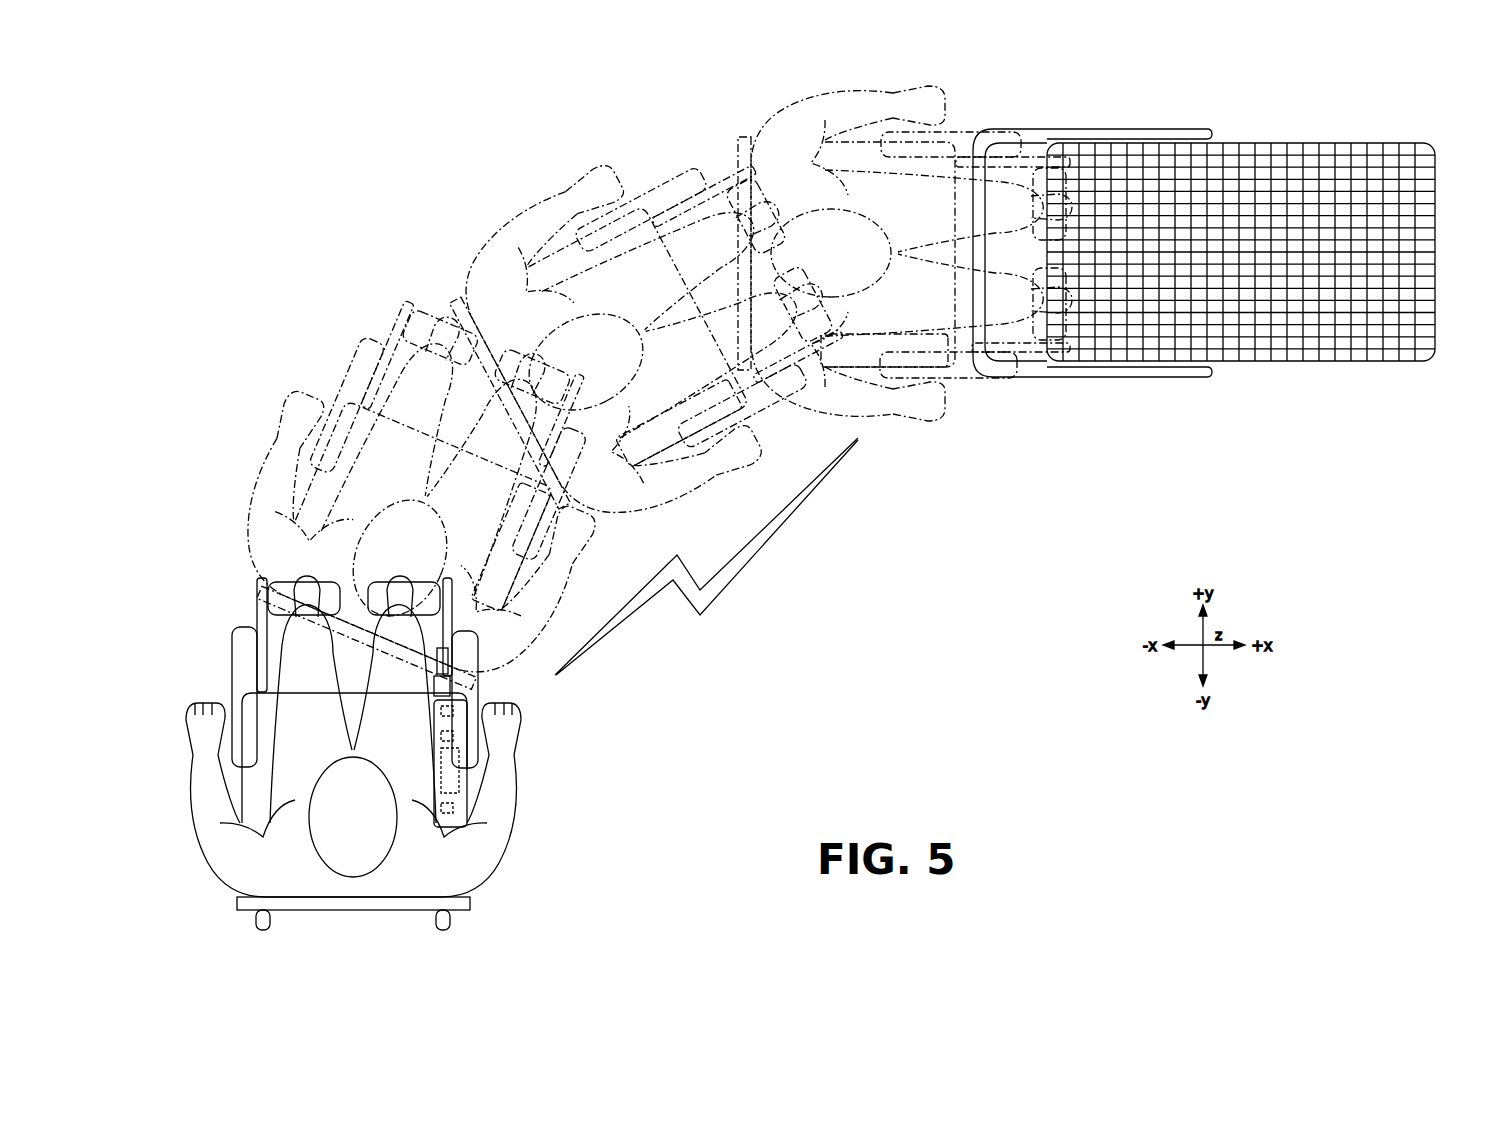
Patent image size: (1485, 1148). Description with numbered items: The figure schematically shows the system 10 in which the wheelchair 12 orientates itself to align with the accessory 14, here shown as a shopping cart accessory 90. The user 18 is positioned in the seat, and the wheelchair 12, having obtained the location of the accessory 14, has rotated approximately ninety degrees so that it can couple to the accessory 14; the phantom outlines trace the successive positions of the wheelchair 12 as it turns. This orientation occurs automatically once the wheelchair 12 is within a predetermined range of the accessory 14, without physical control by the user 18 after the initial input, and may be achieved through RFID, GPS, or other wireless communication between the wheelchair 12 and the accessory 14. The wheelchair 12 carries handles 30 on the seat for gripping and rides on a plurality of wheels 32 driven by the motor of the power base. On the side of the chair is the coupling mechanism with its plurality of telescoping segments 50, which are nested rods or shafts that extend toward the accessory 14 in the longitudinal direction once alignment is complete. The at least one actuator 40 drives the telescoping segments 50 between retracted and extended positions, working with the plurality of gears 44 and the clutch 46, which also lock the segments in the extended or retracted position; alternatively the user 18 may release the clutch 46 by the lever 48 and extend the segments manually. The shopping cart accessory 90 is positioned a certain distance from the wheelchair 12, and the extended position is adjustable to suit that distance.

The system 10 is at (357, 186).
The wheelchair 12 is at (206, 641).
The accessory 14 is at (1136, 110).
The user 18 is at (276, 865).
The handles 30 is at (252, 926).
The wheels 32 is at (242, 660).
The actuator 40 is at (466, 775).
The plurality of gears 44 is at (467, 816).
The clutch 46 is at (468, 738).
The lever 48 is at (460, 697).
The plurality of telescoping segments 50 is at (459, 677).
The shopping cart accessory 90 is at (1437, 363).